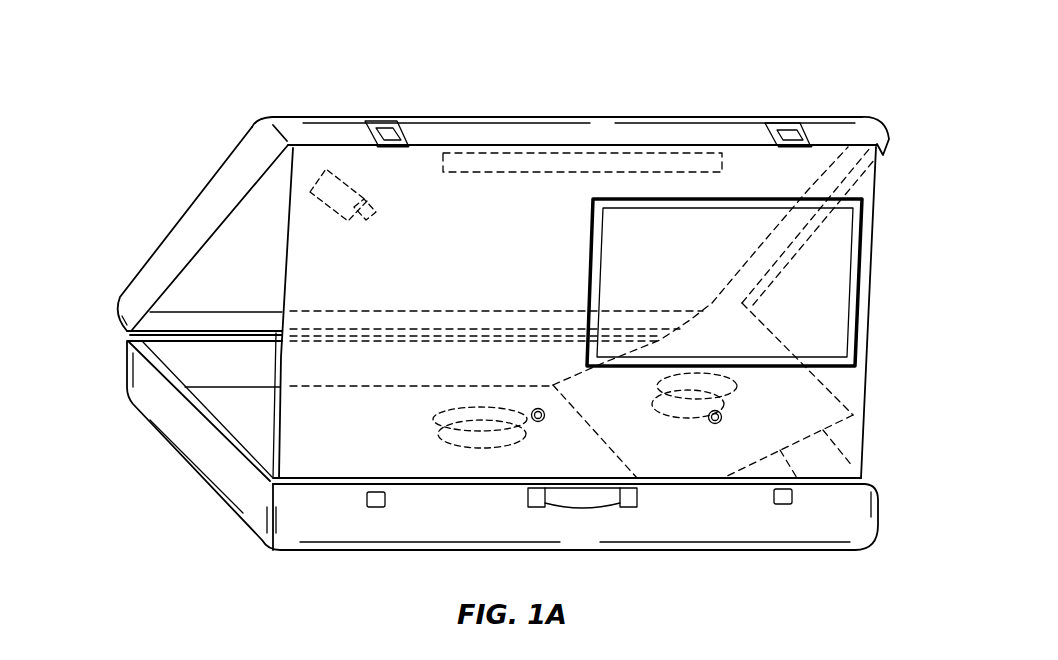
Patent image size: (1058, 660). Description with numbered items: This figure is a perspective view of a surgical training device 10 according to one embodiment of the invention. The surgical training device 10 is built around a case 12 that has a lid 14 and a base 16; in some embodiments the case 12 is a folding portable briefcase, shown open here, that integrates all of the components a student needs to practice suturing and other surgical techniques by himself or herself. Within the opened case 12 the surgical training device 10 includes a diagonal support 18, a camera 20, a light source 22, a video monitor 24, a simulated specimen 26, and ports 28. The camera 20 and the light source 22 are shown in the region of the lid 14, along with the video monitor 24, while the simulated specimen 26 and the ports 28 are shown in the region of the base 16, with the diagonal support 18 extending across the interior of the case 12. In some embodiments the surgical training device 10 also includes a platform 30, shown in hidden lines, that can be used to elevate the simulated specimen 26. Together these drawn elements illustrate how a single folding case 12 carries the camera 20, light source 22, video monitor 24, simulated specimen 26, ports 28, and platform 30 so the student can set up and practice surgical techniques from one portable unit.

The surgical training device 10 is at (650, 92).
The case 12 is at (123, 432).
The lid 14 is at (182, 232).
The base 16 is at (211, 477).
The diagonal support 18 is at (328, 458).
The camera 20 is at (334, 187).
The light source 22 is at (507, 162).
The video monitor 24 is at (840, 287).
The simulated specimen 26 is at (443, 425).
The ports 28 is at (543, 423).
The platform 30 is at (827, 405).